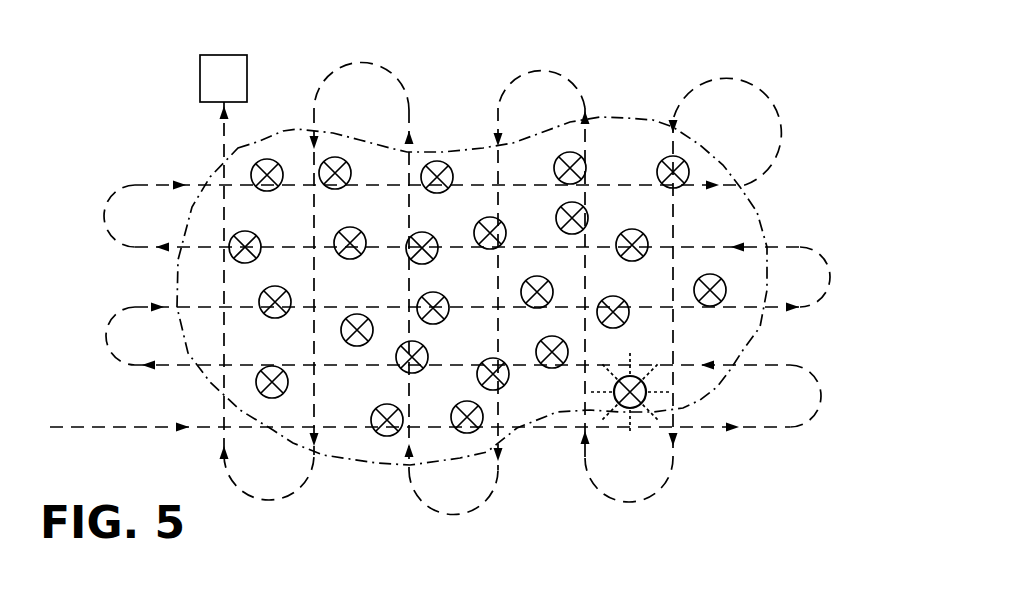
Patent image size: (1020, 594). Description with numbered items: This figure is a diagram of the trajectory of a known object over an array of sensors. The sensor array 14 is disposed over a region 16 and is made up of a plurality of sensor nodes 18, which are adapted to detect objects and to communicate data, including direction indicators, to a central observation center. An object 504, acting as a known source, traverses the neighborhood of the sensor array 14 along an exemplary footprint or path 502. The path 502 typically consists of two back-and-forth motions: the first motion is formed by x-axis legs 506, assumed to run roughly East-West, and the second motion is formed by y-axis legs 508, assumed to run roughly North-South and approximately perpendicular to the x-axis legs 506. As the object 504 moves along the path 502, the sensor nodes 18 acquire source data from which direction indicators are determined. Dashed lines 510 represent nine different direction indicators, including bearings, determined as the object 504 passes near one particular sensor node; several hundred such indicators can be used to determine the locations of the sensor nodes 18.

The sensor array 14 is at (424, 138).
The region 16 is at (299, 128).
The sensor nodes 18 is at (574, 152).
The path 502 is at (659, 64).
The object 504 is at (208, 89).
The x-axis legs 506 is at (780, 245).
The y-axis legs 508 is at (586, 100).
The dashed lines 510 is at (617, 408).